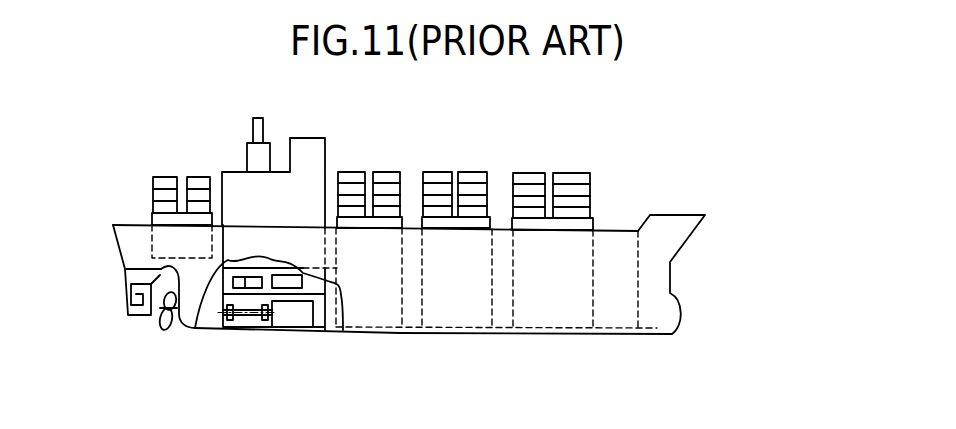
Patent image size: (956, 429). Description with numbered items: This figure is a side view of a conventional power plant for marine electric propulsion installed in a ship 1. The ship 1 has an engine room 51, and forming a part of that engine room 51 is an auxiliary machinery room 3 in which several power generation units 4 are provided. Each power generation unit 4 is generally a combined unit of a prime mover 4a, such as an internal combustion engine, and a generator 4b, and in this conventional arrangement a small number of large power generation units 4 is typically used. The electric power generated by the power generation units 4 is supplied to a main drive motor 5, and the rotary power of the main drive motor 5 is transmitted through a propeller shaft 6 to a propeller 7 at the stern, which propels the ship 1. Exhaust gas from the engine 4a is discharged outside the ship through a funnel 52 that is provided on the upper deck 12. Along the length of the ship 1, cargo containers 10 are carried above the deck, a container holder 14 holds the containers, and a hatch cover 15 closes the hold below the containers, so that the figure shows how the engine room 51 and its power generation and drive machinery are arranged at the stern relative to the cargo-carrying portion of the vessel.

The ship 1 is at (667, 250).
The auxiliary machinery room 3 is at (310, 292).
The power generation unit 4 is at (222, 313).
The prime mover 4a is at (232, 321).
The generator 4b is at (233, 283).
The main drive motor 5 is at (278, 327).
The propeller shaft 6 is at (264, 321).
The propeller 7 is at (163, 323).
The cargo container 10 is at (167, 177).
The upper deck 12 is at (612, 230).
The container holder 14 is at (457, 320).
The hatch cover 15 is at (495, 217).
The engine room 51 is at (318, 316).
The funnel 52 is at (247, 143).